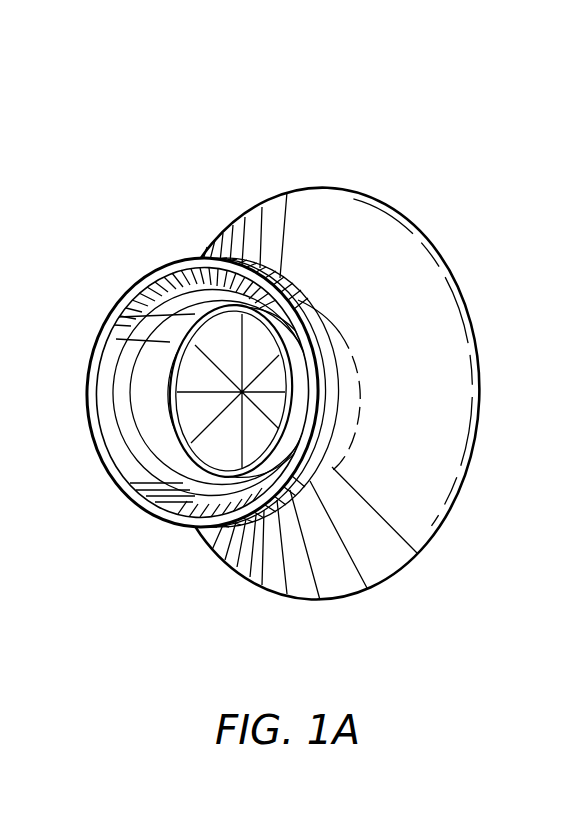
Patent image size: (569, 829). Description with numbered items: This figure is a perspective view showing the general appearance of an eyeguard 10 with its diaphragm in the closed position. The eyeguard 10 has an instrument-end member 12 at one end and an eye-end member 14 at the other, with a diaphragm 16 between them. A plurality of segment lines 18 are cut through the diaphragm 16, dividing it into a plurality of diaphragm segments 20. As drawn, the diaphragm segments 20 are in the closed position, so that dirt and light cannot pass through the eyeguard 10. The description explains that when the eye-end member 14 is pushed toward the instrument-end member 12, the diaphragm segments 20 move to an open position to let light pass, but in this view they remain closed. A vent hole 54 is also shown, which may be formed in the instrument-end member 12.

The eyeguard 10 is at (259, 345).
The instrument-end member 12 is at (172, 550).
The eye-end member 14 is at (445, 557).
The diaphragm 16 is at (203, 413).
The segment lines 18 is at (206, 352).
The diaphragm segments 20 is at (203, 380).
The vent hole 54 is at (183, 500).